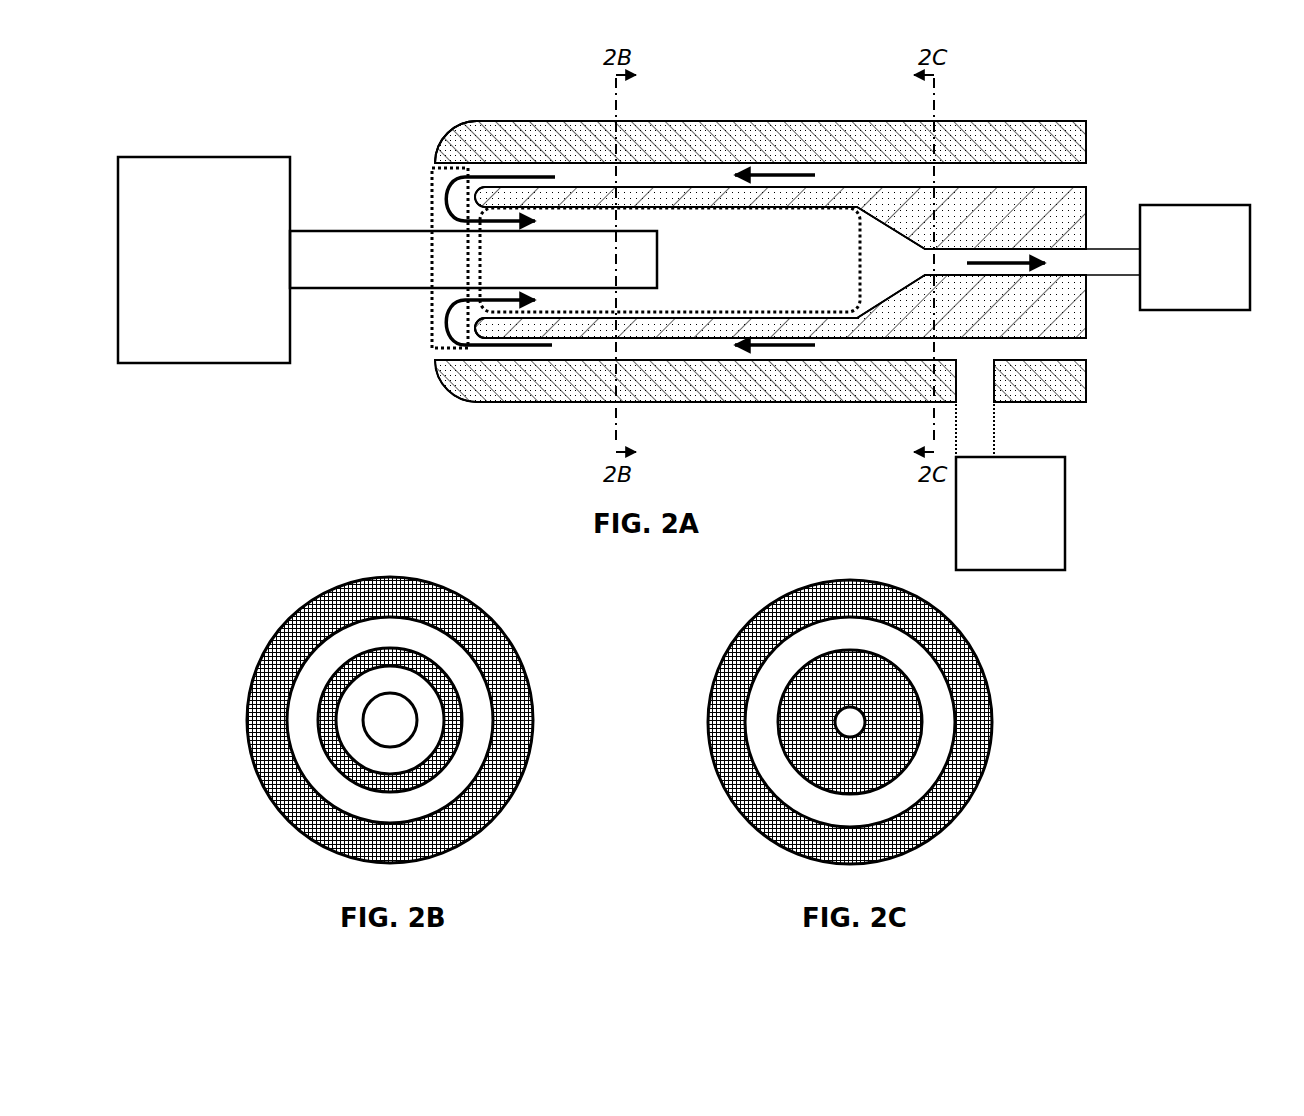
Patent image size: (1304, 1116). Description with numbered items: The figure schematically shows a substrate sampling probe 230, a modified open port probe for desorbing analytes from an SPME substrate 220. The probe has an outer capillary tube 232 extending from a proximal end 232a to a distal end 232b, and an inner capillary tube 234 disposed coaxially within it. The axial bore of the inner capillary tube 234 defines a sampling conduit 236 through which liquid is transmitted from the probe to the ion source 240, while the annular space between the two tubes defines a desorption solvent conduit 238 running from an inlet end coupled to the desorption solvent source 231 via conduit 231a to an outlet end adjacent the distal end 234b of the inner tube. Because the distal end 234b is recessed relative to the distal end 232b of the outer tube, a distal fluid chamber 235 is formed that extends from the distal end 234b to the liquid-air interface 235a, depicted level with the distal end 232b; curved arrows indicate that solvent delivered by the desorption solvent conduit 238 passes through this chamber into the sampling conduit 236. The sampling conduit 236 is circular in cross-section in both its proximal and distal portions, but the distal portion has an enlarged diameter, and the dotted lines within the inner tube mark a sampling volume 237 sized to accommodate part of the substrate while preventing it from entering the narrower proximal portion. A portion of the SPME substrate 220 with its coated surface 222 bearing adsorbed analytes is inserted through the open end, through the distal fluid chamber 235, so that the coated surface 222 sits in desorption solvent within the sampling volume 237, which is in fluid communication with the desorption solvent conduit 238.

In FIG. 2A, the SPME substrate 220 is at (200, 372).
In FIG. 2A, the coated surface 222 is at (393, 288).
In FIG. 2B, the coated surface 222 is at (417, 715).
In FIG. 2A, the substrate sampling probe 230 is at (436, 102).
In FIG. 2A, the desorption solvent source 231 is at (1010, 513).
In FIG. 2A, the conduit 231a is at (994, 413).
In FIG. 2A, the outer capillary tube 232 is at (720, 122).
In FIG. 2B, the outer capillary tube 232 is at (320, 615).
In FIG. 2C, the outer capillary tube 232 is at (967, 760).
In FIG. 2A, the proximal end of outer capillary tube 232a is at (1086, 140).
In FIG. 2A, the distal end of outer capillary tube 232b is at (435, 152).
In FIG. 2A, the inner capillary tube 234 is at (838, 327).
In FIG. 2B, the inner capillary tube 234 is at (388, 653).
In FIG. 2C, the inner capillary tube 234 is at (900, 718).
In FIG. 2A, the distal end of inner capillary tube 234b is at (473, 318).
In FIG. 2A, the distal fluid chamber 235 is at (440, 186).
In FIG. 2A, the liquid-air interface 235a is at (432, 218).
In FIG. 2A, the sampling conduit 236 is at (880, 262).
In FIG. 2B, the sampling conduit 236 is at (355, 743).
In FIG. 2C, the sampling conduit 236 is at (850, 718).
In FIG. 2A, the sampling volume 237 is at (715, 312).
In FIG. 2A, the desorption solvent conduit 238 is at (994, 175).
In FIG. 2B, the desorption solvent conduit 238 is at (297, 715).
In FIG. 2C, the desorption solvent conduit 238 is at (770, 765).
In FIG. 2A, the ion source 240 is at (1195, 257).